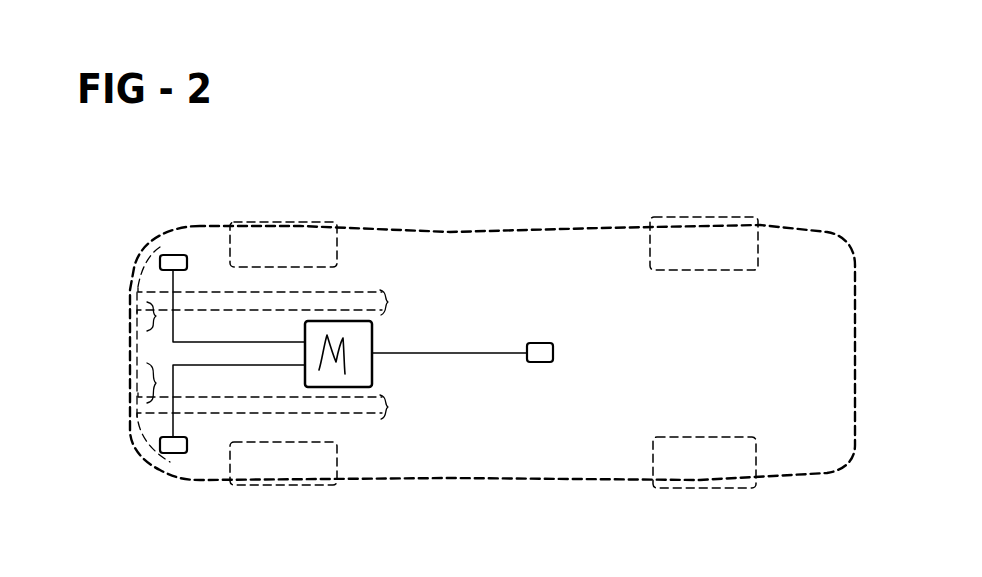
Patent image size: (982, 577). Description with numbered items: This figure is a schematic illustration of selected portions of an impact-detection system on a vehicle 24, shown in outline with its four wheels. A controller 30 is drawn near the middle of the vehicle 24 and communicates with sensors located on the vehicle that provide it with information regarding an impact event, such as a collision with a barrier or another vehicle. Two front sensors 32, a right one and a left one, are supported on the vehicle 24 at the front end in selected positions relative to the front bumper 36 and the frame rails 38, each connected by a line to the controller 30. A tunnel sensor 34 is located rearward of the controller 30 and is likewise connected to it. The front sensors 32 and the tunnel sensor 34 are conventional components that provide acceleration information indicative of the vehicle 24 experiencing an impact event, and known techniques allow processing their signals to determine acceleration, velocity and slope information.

The vehicle 24 is at (603, 226).
The controller 30 is at (360, 340).
The front sensors 32 is at (175, 262).
The tunnel sensor 34 is at (542, 356).
The front bumper 36 is at (128, 345).
The frame rails 38 is at (262, 353).